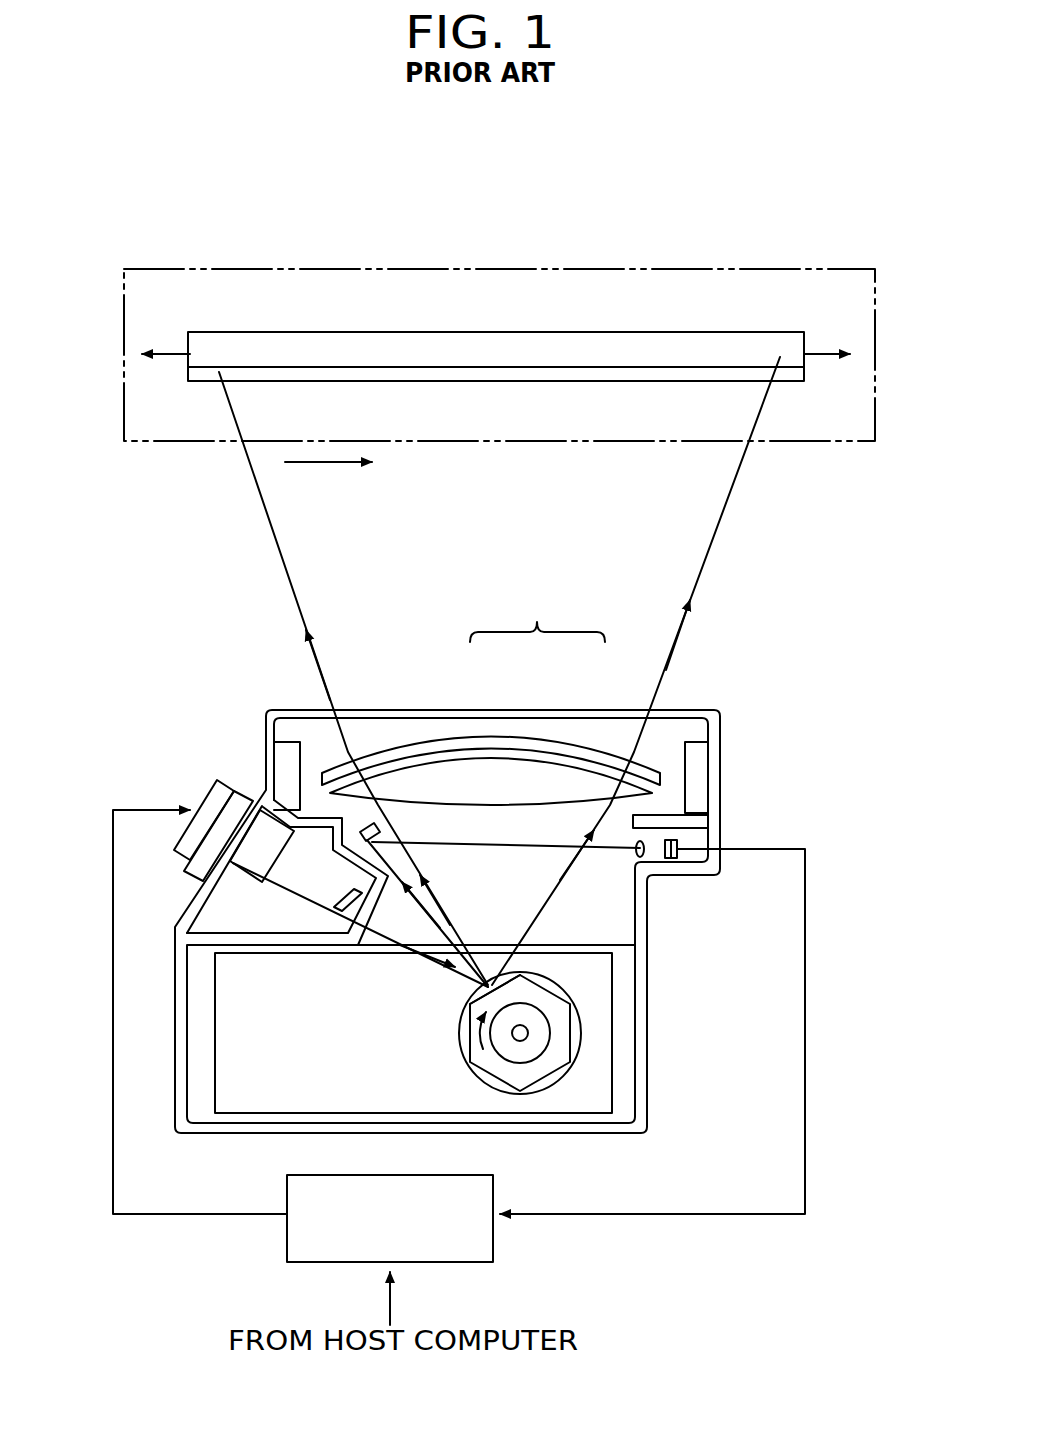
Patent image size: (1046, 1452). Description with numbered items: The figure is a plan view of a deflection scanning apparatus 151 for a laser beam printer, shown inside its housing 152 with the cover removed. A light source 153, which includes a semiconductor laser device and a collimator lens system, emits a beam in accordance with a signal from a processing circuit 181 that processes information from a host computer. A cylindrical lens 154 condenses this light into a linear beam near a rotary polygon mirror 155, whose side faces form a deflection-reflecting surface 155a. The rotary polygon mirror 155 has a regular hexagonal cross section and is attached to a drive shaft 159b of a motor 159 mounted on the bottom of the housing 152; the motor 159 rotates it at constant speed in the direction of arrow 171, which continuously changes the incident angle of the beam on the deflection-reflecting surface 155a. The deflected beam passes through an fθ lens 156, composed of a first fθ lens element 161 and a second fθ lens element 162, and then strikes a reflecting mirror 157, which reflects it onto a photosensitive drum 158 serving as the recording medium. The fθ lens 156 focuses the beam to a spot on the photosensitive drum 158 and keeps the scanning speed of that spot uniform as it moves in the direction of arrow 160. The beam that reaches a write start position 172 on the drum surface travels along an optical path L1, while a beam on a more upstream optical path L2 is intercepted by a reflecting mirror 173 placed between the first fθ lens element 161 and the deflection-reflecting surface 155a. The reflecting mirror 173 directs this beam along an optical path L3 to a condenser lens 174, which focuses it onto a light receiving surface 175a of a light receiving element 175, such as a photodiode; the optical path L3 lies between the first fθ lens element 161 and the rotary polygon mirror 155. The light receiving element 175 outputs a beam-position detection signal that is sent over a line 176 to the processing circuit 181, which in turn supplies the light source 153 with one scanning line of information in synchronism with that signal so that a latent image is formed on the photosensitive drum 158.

The deflection scanning apparatus 151 is at (732, 680).
The housing 152 is at (175, 1115).
The light source 153 is at (252, 868).
The cylindrical lens 154 is at (345, 902).
The rotary polygon mirror 155 is at (497, 1072).
The deflection-reflecting surface 155a is at (485, 988).
The fθ lens 156 is at (537, 614).
The reflecting mirror 157 is at (607, 328).
The photosensitive drum 158 is at (762, 268).
The motor 159 is at (466, 1028).
The drive shaft 159b is at (528, 1031).
The direction of arrow (spot scanning direction) 160 is at (335, 464).
The first fθ lens element 161 is at (485, 770).
The second fθ lens element 162 is at (548, 747).
The direction of arrow (polygon mirror rotation) 171 is at (478, 1047).
The write start position 172 is at (165, 350).
The reflecting mirror 173 is at (353, 822).
The condenser lens 174 is at (637, 857).
The light receiving element 175 is at (680, 860).
The light receiving surface 175a is at (665, 860).
The line 176 is at (800, 1063).
The processing circuit 181 is at (495, 1202).
The optical path L1 is at (278, 548).
The optical path L2 is at (410, 940).
The optical path L3 is at (523, 848).